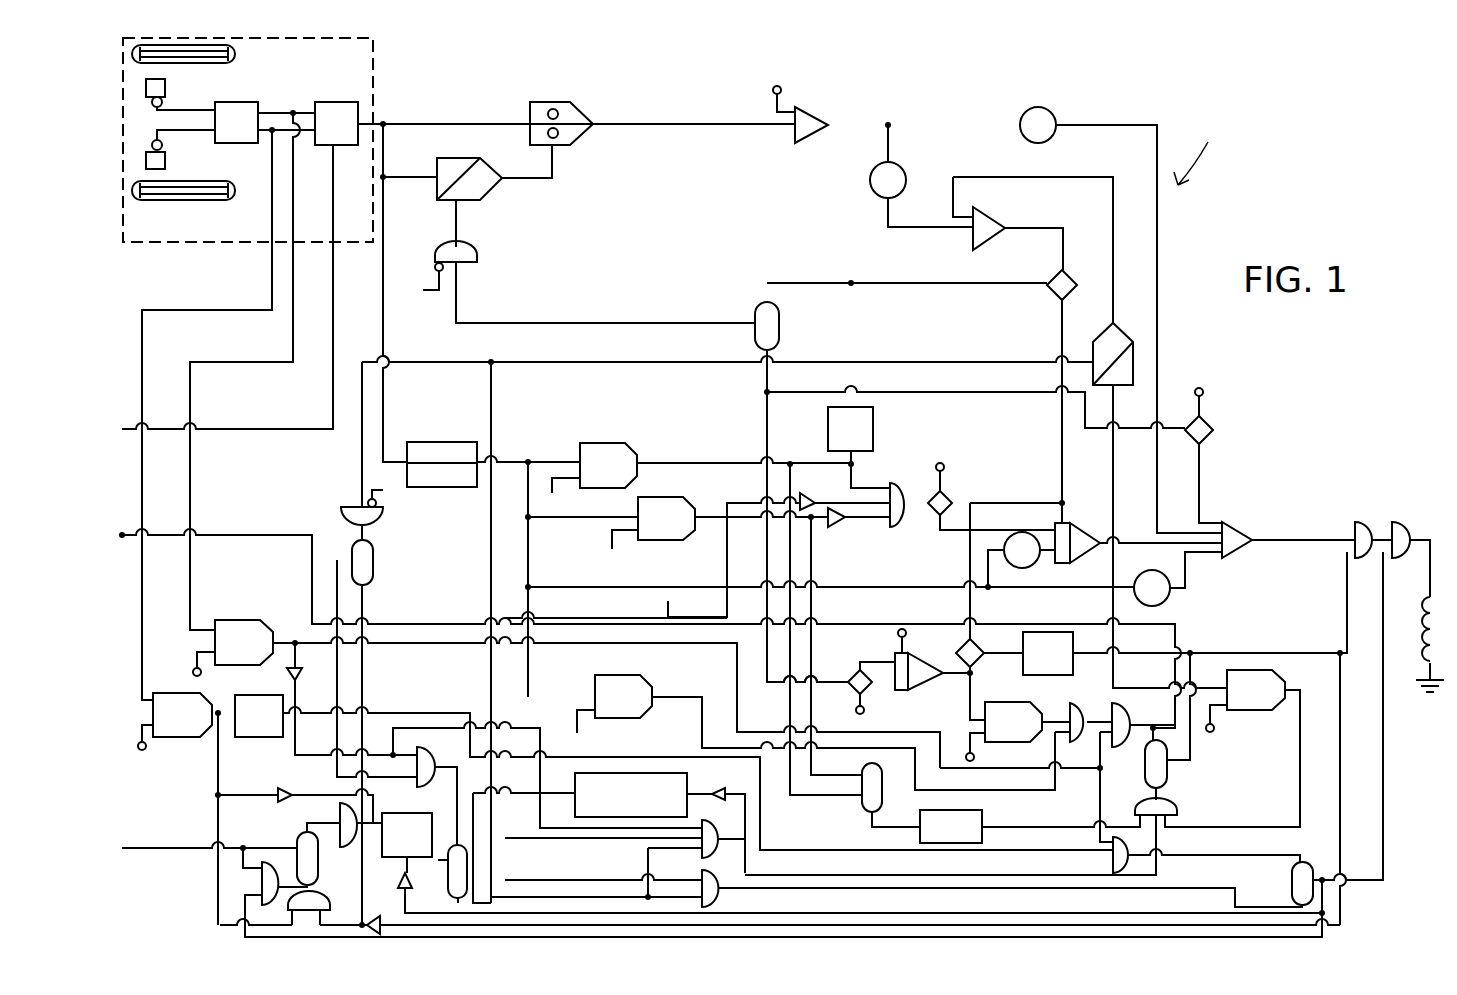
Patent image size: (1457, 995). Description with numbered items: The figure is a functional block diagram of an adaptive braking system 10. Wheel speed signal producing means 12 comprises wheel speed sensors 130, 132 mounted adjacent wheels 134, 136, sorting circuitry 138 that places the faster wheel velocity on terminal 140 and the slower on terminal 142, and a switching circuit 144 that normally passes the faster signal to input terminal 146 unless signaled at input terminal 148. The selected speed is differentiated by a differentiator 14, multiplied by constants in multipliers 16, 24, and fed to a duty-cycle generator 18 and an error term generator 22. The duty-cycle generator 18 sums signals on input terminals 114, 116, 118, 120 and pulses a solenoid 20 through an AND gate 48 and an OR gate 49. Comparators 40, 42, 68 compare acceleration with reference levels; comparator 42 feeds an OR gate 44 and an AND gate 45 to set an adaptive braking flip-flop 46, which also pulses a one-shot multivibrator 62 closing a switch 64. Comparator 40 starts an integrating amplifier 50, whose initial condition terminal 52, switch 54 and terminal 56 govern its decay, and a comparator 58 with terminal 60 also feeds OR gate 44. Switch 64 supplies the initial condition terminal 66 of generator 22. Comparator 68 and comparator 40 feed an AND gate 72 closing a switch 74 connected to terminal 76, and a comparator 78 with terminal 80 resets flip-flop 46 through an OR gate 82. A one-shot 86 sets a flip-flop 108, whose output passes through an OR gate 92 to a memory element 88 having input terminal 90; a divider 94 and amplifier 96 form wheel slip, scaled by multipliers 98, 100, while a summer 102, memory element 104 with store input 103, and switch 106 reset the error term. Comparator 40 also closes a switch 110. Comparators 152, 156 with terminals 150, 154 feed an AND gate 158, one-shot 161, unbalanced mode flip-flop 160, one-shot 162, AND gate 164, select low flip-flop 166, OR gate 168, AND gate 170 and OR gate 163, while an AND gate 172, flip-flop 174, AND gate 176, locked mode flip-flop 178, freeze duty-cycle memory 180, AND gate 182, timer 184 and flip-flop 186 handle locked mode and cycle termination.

The adaptive braking system 10 is at (1203, 154).
The wheel speed signal producing means 12 is at (375, 43).
The differentiator 14 is at (458, 442).
The multiplier 16 is at (1163, 604).
The duty-cycle generator 18 is at (1252, 526).
The solenoid 20 is at (1420, 645).
The error term generator 22 is at (1082, 530).
The multiplier 24 is at (1035, 566).
The first comparator 40 is at (685, 540).
The comparator 42 is at (642, 680).
The OR gate 44 is at (1080, 704).
The AND gate 45 is at (1128, 710).
The adaptive braking flip-flop 46 is at (1168, 770).
The AND gate 48 is at (1360, 520).
The OR gate 49 is at (1398, 520).
The integrating amplifier 50 is at (918, 665).
The initial condition terminal 52 is at (897, 638).
The switch 54 is at (850, 674).
The terminal 56 is at (866, 711).
The comparator 58 is at (1036, 704).
The terminal 60 is at (976, 759).
The one-shot multivibrator 62 is at (1074, 640).
The switch 64 is at (980, 646).
The initial condition terminal 66 is at (1064, 498).
The comparator 68 is at (632, 443).
The AND gate 72 is at (900, 483).
The switch 74 is at (950, 497).
The terminal 76 is at (946, 466).
The comparator 78 is at (1282, 672).
The terminal 80 is at (1216, 730).
The OR gate 82 is at (1178, 806).
The one-shot 86 is at (875, 420).
The memory element 88 is at (492, 190).
The input terminal 90 is at (412, 183).
The OR gate 92 is at (465, 252).
The divider 94 is at (585, 112).
The amplifier 96 is at (810, 118).
The multiplier 98 is at (1052, 114).
The multiplier 100 is at (902, 170).
The summer 102 is at (995, 222).
The store input 103 is at (1068, 350).
The memory element 104 is at (1118, 330).
The switch 106 is at (1052, 275).
The flip-flop 108 is at (780, 318).
The switch 110 is at (1210, 420).
The input terminal 114 is at (1204, 518).
The input terminal 116 is at (1168, 528).
The input terminal 118 is at (1128, 530).
The input terminal 120 is at (1204, 556).
The wheel speed sensor 130 is at (166, 88).
The wheel speed sensor 132 is at (166, 161).
The wheel 134 is at (230, 53).
The wheel 136 is at (186, 192).
The sorting circuitry 138 is at (250, 102).
The terminal 140 is at (275, 113).
The terminal 142 is at (270, 165).
The switching circuit 144 is at (344, 102).
The input terminal 146 is at (380, 124).
The input terminal 148 is at (334, 180).
The terminal 150 is at (195, 650).
The comparator 152 is at (258, 620).
The input terminal 154 is at (148, 750).
The comparator 156 is at (165, 693).
The AND gate 158 is at (1112, 862).
The unbalanced mode flip-flop 160 is at (1292, 875).
The one-shot 161 is at (270, 687).
The one-shot 162 is at (420, 809).
The OR gate 163 is at (718, 896).
The AND gate 164 is at (340, 815).
The select low flip-flop 166 is at (319, 860).
The OR gate 168 is at (320, 902).
The AND gate 170 is at (262, 862).
The AND gate 172 is at (380, 520).
The flip-flop 174 is at (374, 565).
The AND gate 176 is at (428, 760).
The locked mode flip-flop 178 is at (447, 890).
The freeze duty-cycle memory 180 is at (688, 778).
The AND gate 182 is at (718, 830).
The timer 184 is at (982, 815).
The flip-flop 186 is at (883, 796).